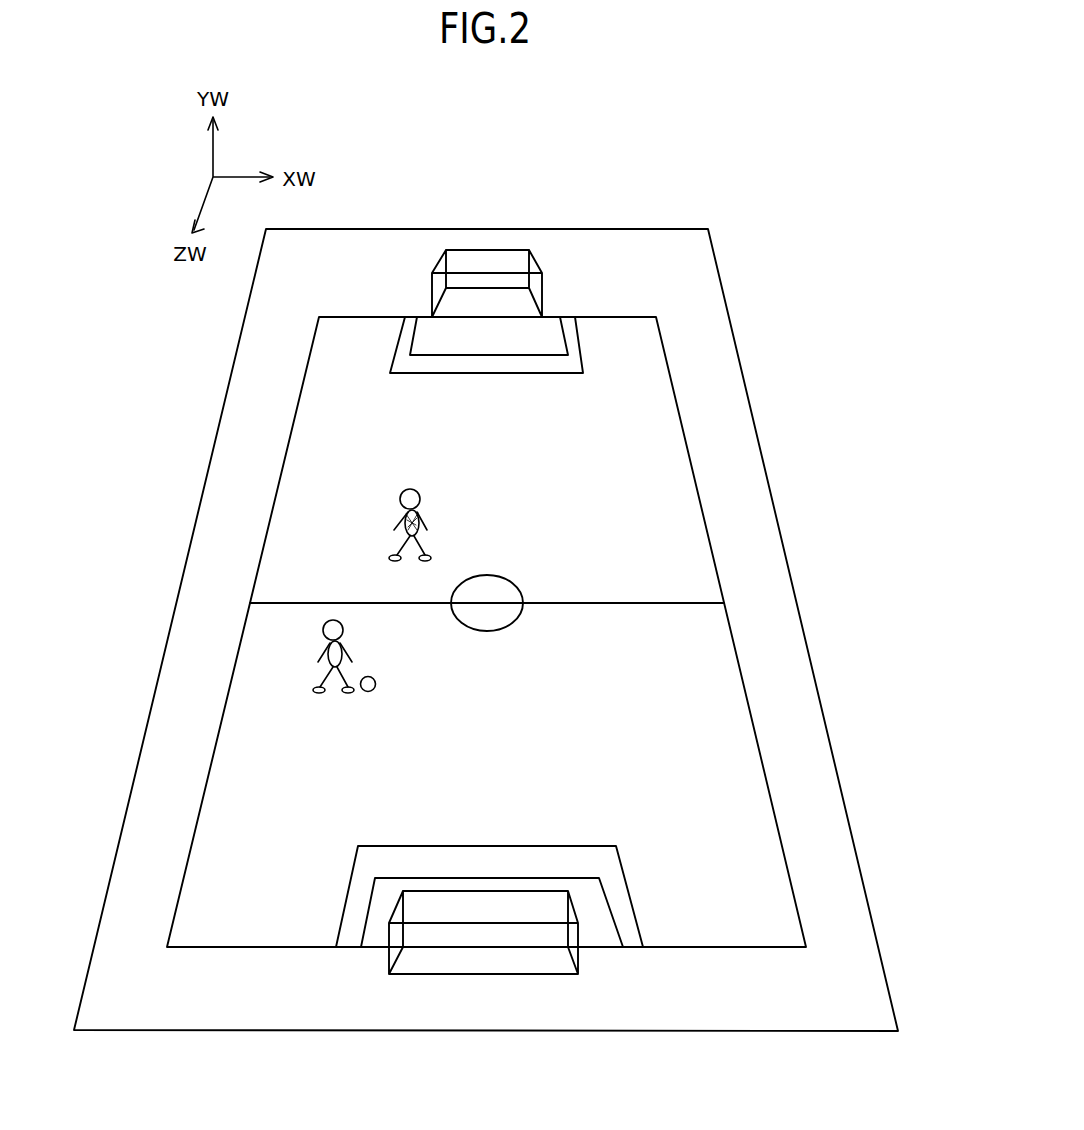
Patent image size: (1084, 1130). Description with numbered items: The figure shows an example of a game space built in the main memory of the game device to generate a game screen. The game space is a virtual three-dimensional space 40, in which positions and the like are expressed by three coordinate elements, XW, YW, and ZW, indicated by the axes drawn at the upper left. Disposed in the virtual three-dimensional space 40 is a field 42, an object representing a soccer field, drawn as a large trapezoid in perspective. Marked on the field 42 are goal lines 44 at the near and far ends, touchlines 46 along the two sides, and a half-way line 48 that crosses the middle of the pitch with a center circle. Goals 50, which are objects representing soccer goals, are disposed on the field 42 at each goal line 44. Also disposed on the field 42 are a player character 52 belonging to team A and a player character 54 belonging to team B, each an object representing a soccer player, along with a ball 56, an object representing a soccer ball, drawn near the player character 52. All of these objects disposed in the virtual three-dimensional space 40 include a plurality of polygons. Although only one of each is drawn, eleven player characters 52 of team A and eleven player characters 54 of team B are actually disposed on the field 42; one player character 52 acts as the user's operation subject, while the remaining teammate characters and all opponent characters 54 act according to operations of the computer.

The virtual three-dimensional space 40 is at (570, 141).
The field 42 is at (784, 600).
The goal lines 44 is at (620, 316).
The touchlines 46 is at (285, 459).
The half-way line 48 is at (613, 605).
The goals 50 is at (485, 248).
The player character 52 is at (343, 629).
The player character 54 is at (420, 498).
The ball 56 is at (376, 683).